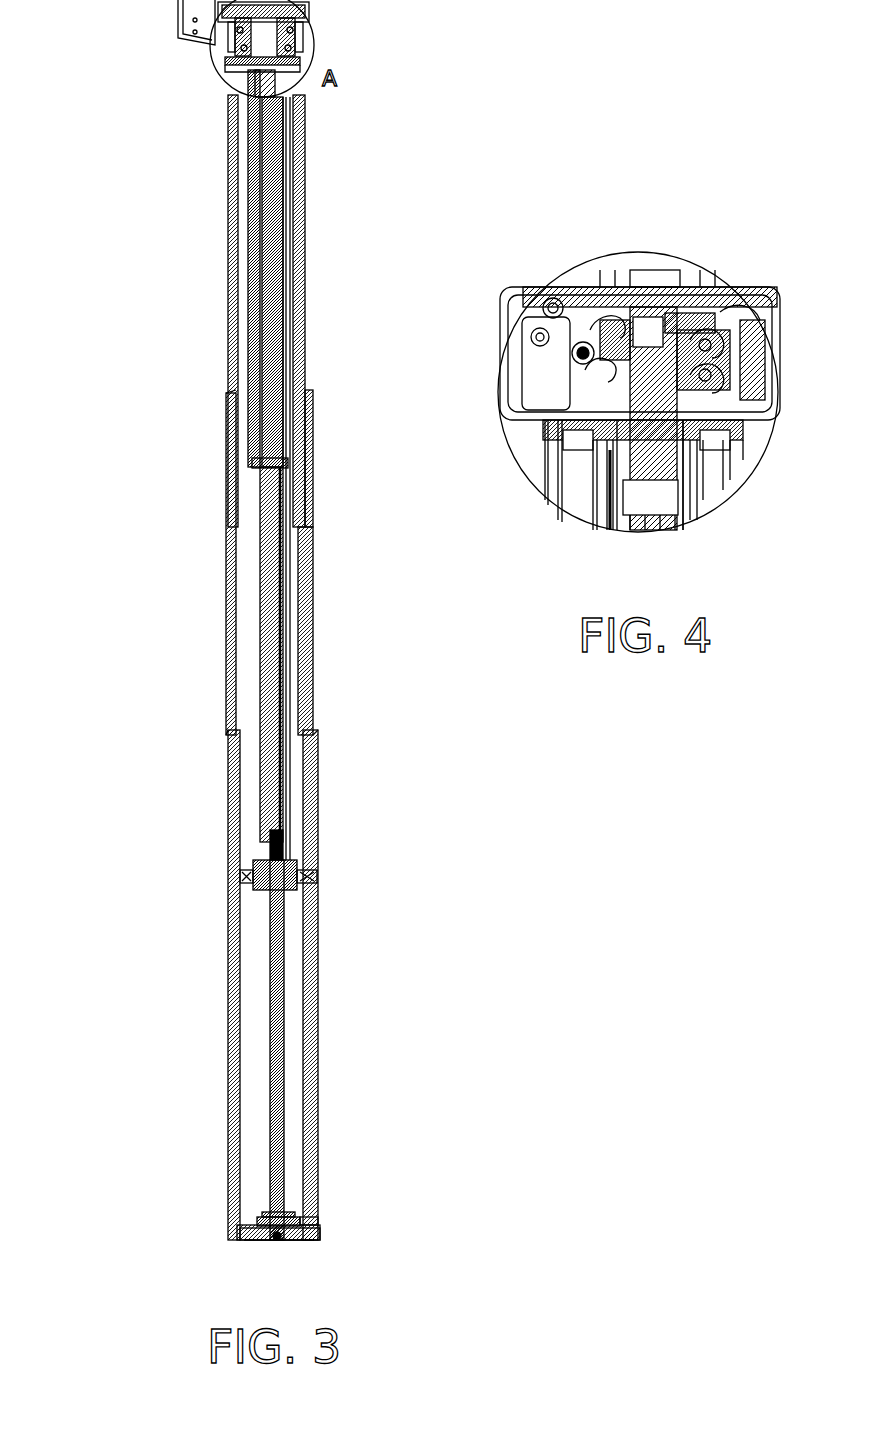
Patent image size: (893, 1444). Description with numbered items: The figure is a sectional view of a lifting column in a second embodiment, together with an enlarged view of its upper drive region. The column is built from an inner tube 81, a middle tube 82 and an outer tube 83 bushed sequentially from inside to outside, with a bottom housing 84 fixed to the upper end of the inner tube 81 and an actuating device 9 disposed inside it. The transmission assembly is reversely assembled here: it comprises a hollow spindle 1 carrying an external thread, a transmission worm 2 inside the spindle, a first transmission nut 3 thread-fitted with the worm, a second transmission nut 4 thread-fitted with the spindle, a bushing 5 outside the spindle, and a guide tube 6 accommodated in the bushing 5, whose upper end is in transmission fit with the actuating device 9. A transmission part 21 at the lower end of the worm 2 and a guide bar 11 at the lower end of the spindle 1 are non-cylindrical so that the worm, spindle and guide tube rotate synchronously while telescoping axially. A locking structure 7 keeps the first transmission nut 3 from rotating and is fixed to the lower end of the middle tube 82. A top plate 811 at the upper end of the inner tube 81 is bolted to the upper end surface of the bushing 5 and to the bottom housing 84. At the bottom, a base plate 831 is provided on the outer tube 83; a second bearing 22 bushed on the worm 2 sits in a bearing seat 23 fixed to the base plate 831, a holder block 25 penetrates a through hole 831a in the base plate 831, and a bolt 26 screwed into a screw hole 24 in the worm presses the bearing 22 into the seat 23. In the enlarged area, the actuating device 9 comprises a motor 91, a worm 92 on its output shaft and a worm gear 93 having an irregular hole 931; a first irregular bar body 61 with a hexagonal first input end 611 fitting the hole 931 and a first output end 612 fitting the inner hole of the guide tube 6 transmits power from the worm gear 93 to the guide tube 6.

In FIG. 3, the hollow spindle 1 is at (282, 628).
In FIG. 3, the transmission worm 2 is at (283, 1131).
In FIG. 3, the first transmission nut 3 is at (315, 872).
In FIG. 3, the second transmission nut 4 is at (307, 520).
In FIG. 3, the bushing 5 is at (257, 337).
In FIG. 3, the guide tube 6 is at (253, 267).
In FIG. 4, the guide tube 6 is at (700, 487).
In FIG. 3, the locking structure 7 is at (313, 866).
In FIG. 3, the actuating device 9 is at (298, 33).
In FIG. 3, the guide bar 11 is at (262, 468).
In FIG. 3, the transmission part 21 is at (272, 842).
In FIG. 3, the second bearing 22 is at (267, 1223).
In FIG. 3, the bearing seat 23 is at (267, 1218).
In FIG. 3, the screw hole 24 is at (278, 1242).
In FIG. 3, the holder block 25 is at (292, 1240).
In FIG. 3, the bolt 26 is at (302, 1225).
In FIG. 4, the first irregular bar body 61 is at (690, 413).
In FIG. 3, the inner tube 81 is at (230, 227).
In FIG. 3, the middle tube 82 is at (230, 563).
In FIG. 3, the outer tube 83 is at (232, 990).
In FIG. 3, the bottom housing 84 is at (205, 25).
In FIG. 4, the bottom housing 84 is at (520, 340).
In FIG. 4, the motor 91 is at (723, 312).
In FIG. 4, the worm 92 is at (575, 350).
In FIG. 4, the worm gear 93 is at (603, 330).
In FIG. 4, the first input end 611 is at (683, 357).
In FIG. 4, the first output end 612 is at (700, 447).
In FIG. 3, the top plate 811 is at (240, 62).
In FIG. 4, the top plate 811 is at (570, 440).
In FIG. 3, the base plate 831 is at (248, 1230).
In FIG. 3, the through hole 831a is at (245, 1240).
In FIG. 4, the irregular hole 931 is at (723, 328).